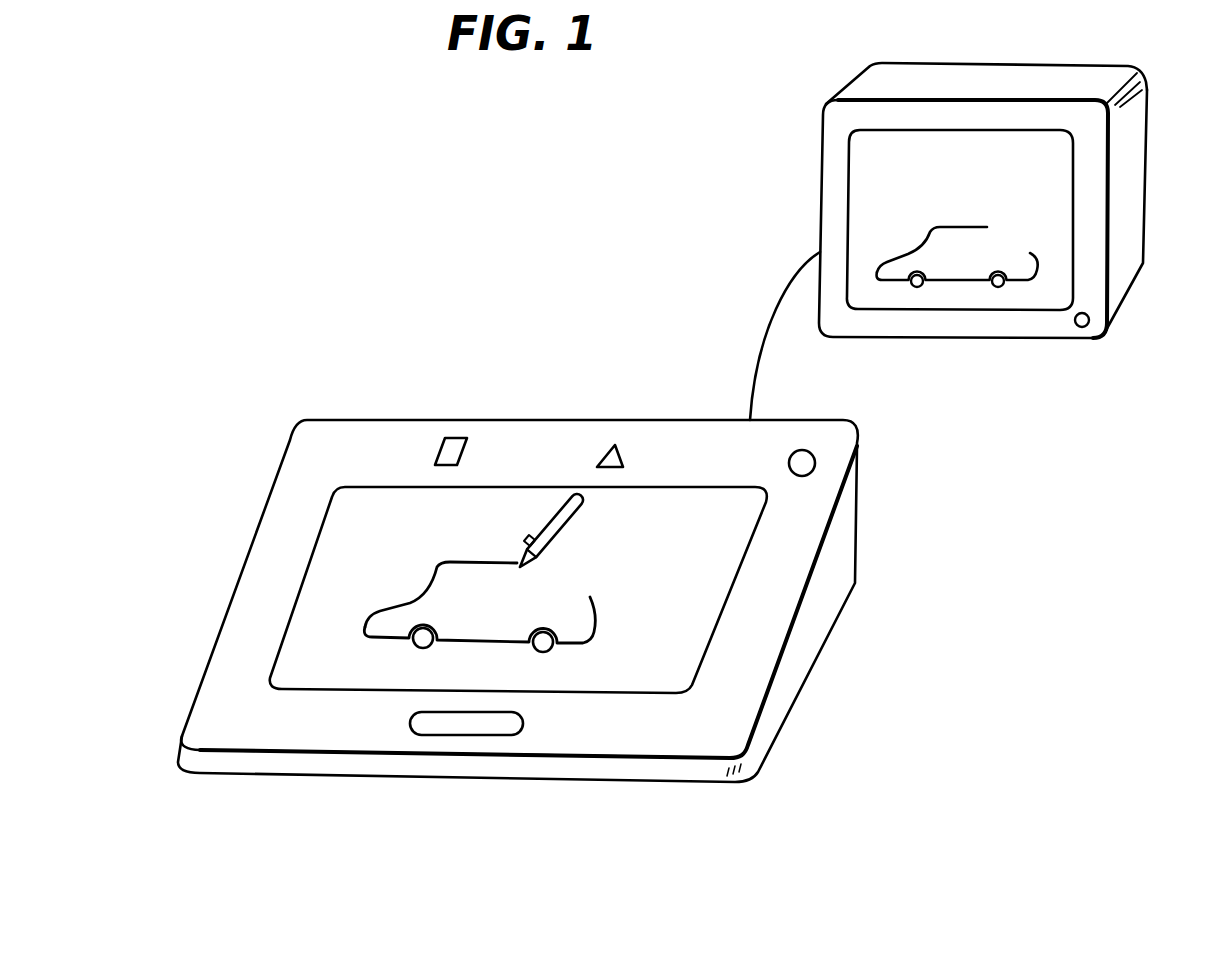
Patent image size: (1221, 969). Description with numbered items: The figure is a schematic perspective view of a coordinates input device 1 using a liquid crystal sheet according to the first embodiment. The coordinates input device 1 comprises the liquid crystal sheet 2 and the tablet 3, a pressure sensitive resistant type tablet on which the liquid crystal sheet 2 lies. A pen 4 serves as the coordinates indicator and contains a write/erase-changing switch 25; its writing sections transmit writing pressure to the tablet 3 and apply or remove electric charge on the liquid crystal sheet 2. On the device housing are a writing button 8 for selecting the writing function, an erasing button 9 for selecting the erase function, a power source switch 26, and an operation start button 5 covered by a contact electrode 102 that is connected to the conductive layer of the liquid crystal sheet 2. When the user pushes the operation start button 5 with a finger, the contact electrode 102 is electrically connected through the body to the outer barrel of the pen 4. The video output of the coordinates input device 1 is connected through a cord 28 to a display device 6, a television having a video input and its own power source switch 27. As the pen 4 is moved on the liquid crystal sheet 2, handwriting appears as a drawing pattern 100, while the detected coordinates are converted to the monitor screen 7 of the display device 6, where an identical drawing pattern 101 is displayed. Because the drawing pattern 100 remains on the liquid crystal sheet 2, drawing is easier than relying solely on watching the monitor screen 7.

The coordinates input device 1 is at (382, 402).
The liquid crystal sheet 2 is at (333, 547).
The tablet 3 is at (795, 670).
The pen 4 is at (562, 515).
The operation start button 5 is at (480, 727).
The display device 6 is at (1133, 220).
The monitor screen 7 is at (872, 185).
The writing button 8 is at (450, 448).
The erasing button 9 is at (615, 447).
The write/erase-changing switch 25 is at (525, 540).
The power source switch 26 is at (803, 450).
The power source switch 27 is at (1078, 328).
The cord 28 is at (765, 327).
The drawing pattern 100 is at (597, 650).
The drawing pattern 101 is at (1020, 283).
The contact electrode 102 is at (423, 729).